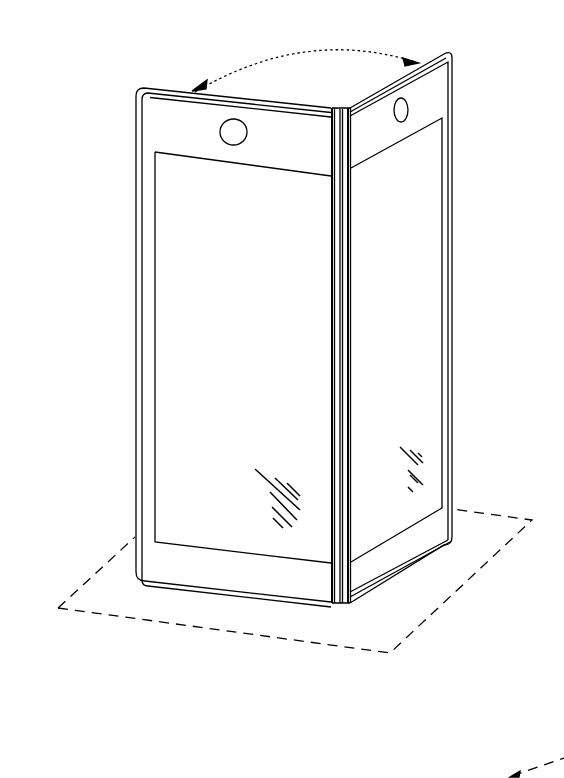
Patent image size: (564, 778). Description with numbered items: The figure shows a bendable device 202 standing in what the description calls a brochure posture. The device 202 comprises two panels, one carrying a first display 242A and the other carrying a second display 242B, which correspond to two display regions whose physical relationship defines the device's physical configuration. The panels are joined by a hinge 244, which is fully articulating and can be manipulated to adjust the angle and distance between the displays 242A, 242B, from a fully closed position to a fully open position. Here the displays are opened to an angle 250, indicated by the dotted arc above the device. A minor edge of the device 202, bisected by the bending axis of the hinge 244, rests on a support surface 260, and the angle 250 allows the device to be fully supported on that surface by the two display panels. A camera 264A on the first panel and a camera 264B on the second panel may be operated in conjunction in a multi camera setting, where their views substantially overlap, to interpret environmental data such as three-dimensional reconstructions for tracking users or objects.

The device 202 is at (67, 133).
The display 242A is at (215, 362).
The display 242B is at (371, 343).
The hinge 244 is at (335, 396).
The angle 250 is at (273, 58).
The support surface 260 is at (387, 636).
The camera 264A is at (228, 145).
The camera 264B is at (401, 122).